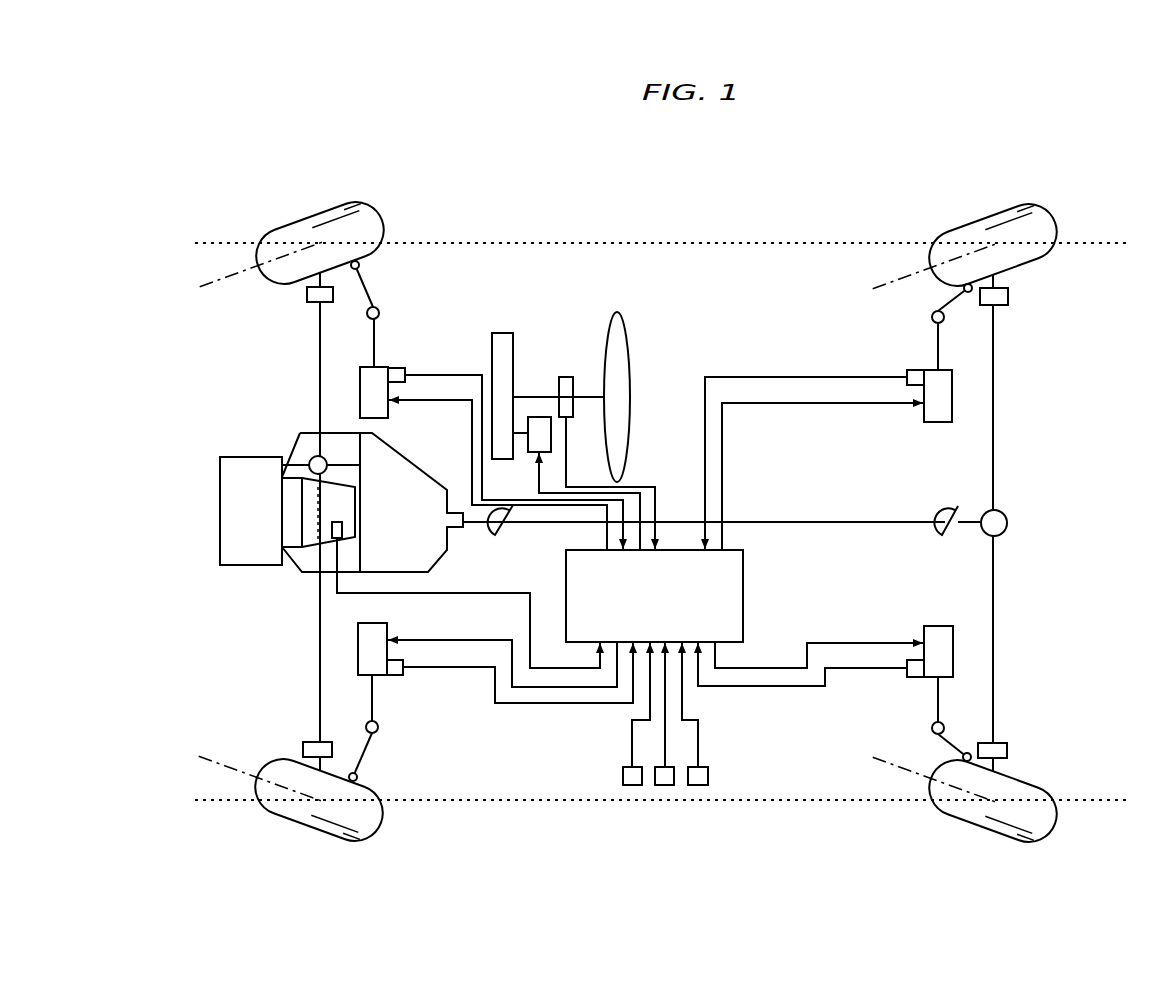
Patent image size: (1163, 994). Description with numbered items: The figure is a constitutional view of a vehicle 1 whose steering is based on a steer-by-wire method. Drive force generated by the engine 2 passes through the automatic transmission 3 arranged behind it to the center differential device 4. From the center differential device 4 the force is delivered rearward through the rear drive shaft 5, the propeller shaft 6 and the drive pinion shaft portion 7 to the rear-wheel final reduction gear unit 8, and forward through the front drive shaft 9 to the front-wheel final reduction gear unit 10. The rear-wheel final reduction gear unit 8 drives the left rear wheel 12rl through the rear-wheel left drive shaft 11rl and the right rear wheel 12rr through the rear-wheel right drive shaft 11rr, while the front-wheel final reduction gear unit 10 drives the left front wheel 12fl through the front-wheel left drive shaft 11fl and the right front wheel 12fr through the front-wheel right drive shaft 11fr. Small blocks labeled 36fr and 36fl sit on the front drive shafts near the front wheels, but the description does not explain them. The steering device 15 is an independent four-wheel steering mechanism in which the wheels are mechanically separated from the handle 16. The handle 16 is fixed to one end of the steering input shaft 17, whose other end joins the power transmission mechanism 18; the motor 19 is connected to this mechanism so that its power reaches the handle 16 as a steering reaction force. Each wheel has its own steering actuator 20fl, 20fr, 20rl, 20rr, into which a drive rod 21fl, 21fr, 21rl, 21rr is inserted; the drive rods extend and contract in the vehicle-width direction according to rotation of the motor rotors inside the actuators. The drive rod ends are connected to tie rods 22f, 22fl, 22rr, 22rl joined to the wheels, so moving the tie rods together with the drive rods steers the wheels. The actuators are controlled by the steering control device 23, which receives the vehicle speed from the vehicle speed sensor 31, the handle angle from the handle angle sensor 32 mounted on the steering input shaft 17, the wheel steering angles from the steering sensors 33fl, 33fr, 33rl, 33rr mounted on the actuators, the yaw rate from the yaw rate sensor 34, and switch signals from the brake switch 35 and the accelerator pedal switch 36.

The vehicle 1 is at (775, 226).
The engine 2 is at (220, 512).
The automatic transmission 3 is at (292, 475).
The center differential device 4 is at (420, 467).
The rear drive shaft 5 is at (479, 527).
The propeller shaft 6 is at (535, 528).
The drive pinion shaft portion 7 is at (970, 537).
The rear-wheel final reduction gear unit 8 is at (1008, 522).
The front drive shaft 9 is at (347, 463).
The front-wheel final reduction gear unit 10 is at (313, 457).
The front-wheel right drive shaft 11fr is at (320, 360).
The front-wheel left drive shaft 11fl is at (320, 646).
The rear-wheel right drive shaft 11rr is at (993, 394).
The rear-wheel left drive shaft 11rl is at (993, 641).
The right front wheel 12fr is at (392, 213).
The left front wheel 12fl is at (390, 822).
The right rear wheel 12rr is at (1066, 217).
The left rear wheel 12rl is at (1066, 823).
The steering device 15 is at (608, 403).
The handle 16 is at (618, 313).
The steering input shaft 17 is at (588, 397).
The power transmission mechanism 18 is at (501, 333).
The motor 19 is at (538, 417).
The steering actuator 20fr is at (392, 416).
The steering actuator 20fl is at (388, 626).
The steering actuator 20rr is at (938, 423).
The steering actuator 20rl is at (937, 625).
The drive rod 21fr is at (380, 320).
The drive rod 21fl is at (377, 695).
The drive rod 21rr is at (933, 347).
The drive rod 21rl is at (935, 700).
The tie rod 22f is at (360, 270).
The tie rod 22fl is at (367, 757).
The tie rod 22rr is at (958, 296).
The tie rod 22rl is at (950, 747).
The steering control device 23 is at (743, 593).
The vehicle speed sensor 31 is at (348, 522).
The handle angle sensor 32 is at (566, 377).
The steering sensor 33fr is at (402, 368).
The steering sensor 33fl is at (403, 678).
The steering sensor 33rr is at (908, 370).
The steering sensor 33rl is at (907, 672).
The yaw rate sensor 34 is at (632, 785).
The brake switch 35 is at (665, 785).
The accelerator pedal switch 36 is at (698, 785).
The front right wheel speed sensor 36fr is at (307, 295).
The front left wheel speed sensor 36fl is at (304, 748).